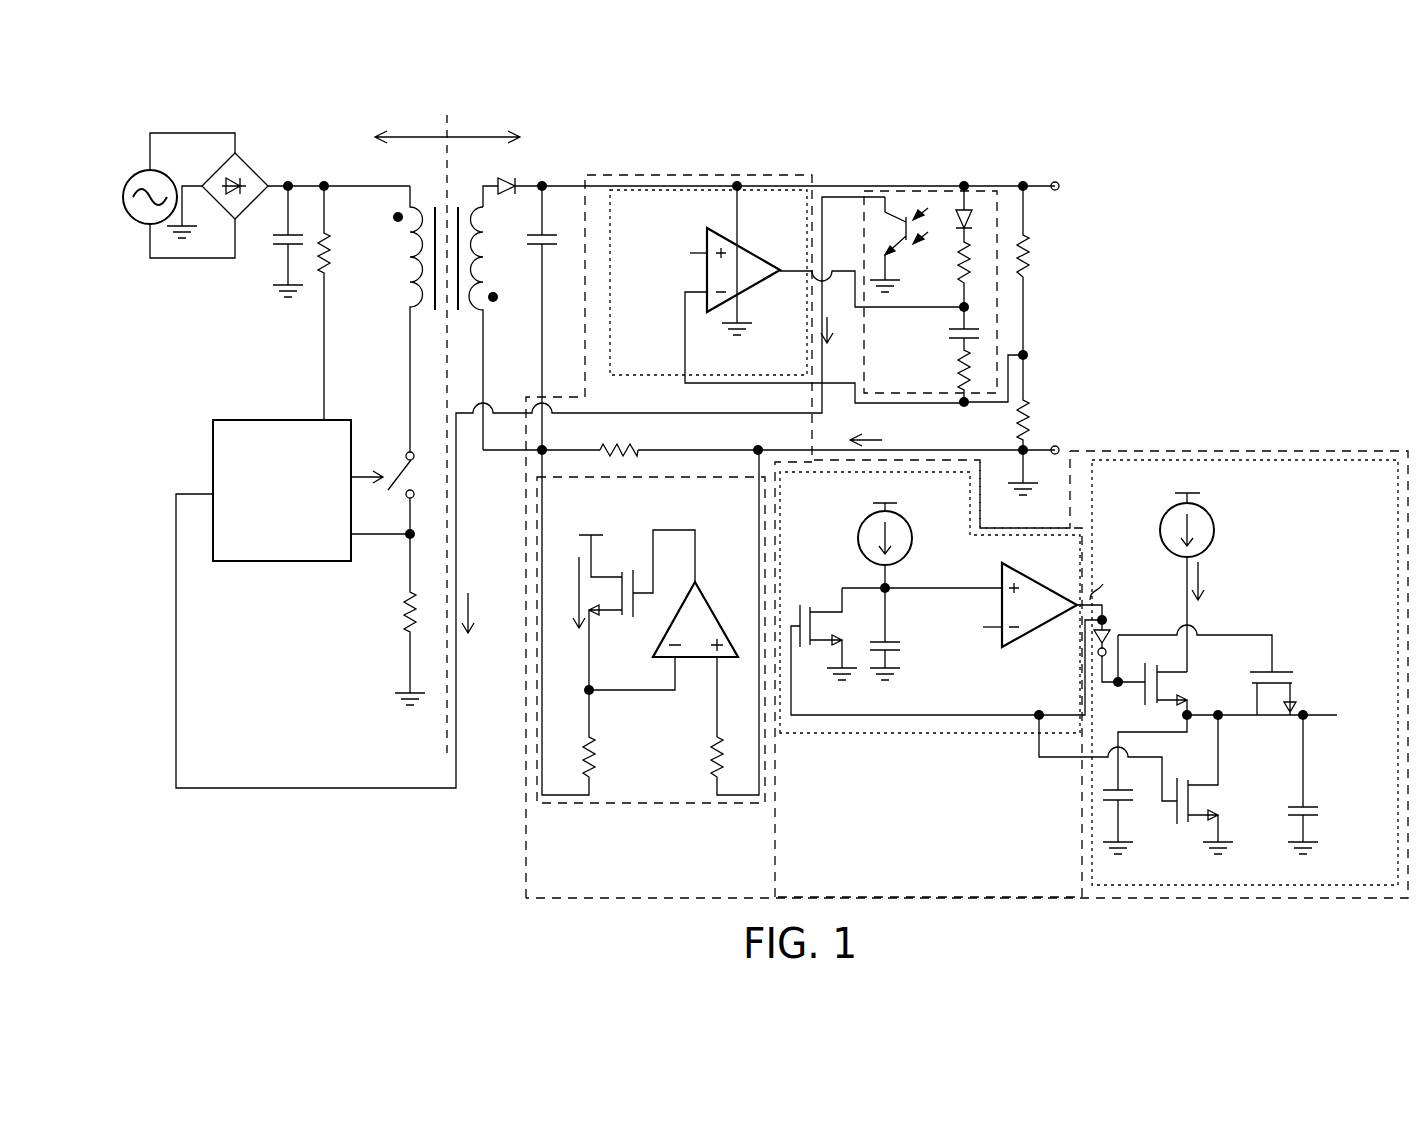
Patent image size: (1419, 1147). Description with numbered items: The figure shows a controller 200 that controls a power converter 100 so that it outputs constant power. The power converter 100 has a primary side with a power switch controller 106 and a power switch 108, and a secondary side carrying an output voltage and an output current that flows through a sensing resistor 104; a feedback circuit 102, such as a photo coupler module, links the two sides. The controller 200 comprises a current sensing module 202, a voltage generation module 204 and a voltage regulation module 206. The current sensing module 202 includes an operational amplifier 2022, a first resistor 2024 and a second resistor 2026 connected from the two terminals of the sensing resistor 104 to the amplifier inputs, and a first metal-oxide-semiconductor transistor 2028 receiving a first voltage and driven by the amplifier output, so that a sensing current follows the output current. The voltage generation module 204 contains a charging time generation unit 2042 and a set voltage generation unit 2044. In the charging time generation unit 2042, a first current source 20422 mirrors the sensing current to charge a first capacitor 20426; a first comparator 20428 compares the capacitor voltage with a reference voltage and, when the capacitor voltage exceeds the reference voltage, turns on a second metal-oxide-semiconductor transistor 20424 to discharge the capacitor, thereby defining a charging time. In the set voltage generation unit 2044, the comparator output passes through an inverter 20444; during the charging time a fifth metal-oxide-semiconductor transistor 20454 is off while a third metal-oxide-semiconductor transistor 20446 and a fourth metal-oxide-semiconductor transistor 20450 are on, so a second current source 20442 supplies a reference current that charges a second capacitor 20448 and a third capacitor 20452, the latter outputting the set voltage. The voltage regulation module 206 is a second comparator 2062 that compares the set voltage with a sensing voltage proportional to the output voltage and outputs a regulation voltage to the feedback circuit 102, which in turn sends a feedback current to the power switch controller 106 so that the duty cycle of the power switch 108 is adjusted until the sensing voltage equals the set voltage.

The power converter 100 is at (1227, 222).
The feedback circuit 102 is at (933, 191).
The sensing resistor 104 is at (633, 448).
The power switch controller 106 is at (255, 420).
The power switch 108 is at (390, 458).
The controller 200 is at (1353, 451).
The current sensing module 202 is at (648, 805).
The voltage generation module 204 is at (1178, 451).
The voltage regulation module 206 is at (698, 175).
The operational amplifier 2022 is at (698, 598).
The first resistor 2024 is at (712, 773).
The second resistor 2026 is at (596, 775).
The first metal-oxide-semiconductor transistor 2028 is at (622, 572).
The charging time generation unit 2042 is at (918, 733).
The set voltage generation unit 2044 is at (1278, 460).
The second comparator 2062 is at (752, 232).
The first current source 20422 is at (866, 520).
The second metal-oxide-semiconductor transistor 20424 is at (828, 623).
The first capacitor 20426 is at (898, 648).
The first comparator 20428 is at (1040, 627).
The second current source 20442 is at (1213, 513).
The inverter 20444 is at (1113, 630).
The third metal-oxide-semiconductor transistor 20446 is at (1180, 688).
The second capacitor 20448 is at (1135, 798).
The fourth metal-oxide-semiconductor transistor 20450 is at (1270, 706).
The third capacitor 20452 is at (1337, 803).
The fifth metal-oxide-semiconductor transistor 20454 is at (1212, 799).